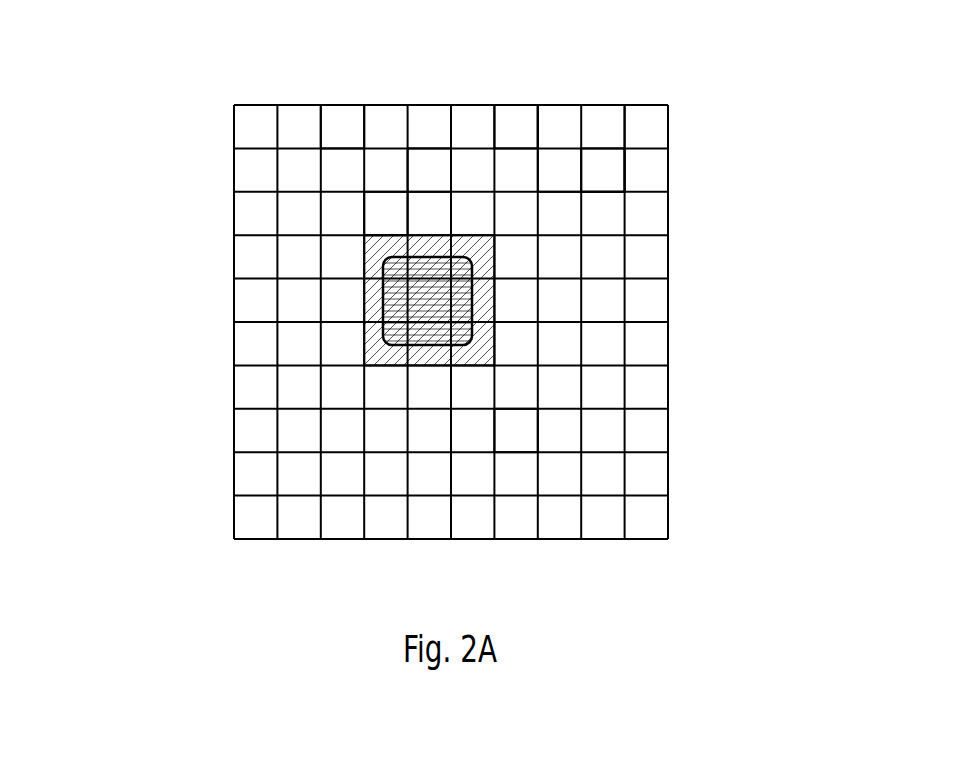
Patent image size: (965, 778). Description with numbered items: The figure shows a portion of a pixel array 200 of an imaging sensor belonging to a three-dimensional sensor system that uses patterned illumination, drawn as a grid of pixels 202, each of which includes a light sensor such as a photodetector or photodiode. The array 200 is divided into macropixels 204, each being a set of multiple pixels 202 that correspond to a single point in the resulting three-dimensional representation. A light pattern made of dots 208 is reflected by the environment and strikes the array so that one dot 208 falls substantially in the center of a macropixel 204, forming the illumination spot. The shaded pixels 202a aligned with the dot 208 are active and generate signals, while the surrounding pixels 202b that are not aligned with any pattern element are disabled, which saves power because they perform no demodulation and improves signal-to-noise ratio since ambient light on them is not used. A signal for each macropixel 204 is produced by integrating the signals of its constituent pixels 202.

The pixel array 200 is at (204, 91).
The pixel 202 is at (362, 140).
The aligned pixel 202a is at (372, 262).
The disabled pixel 202b is at (513, 153).
The macropixel 204 is at (558, 148).
The dot 208 is at (427, 345).